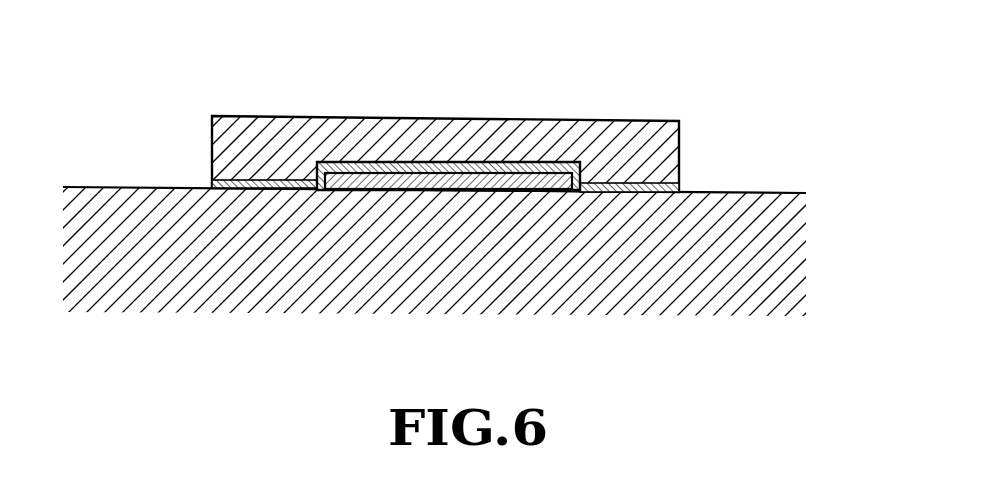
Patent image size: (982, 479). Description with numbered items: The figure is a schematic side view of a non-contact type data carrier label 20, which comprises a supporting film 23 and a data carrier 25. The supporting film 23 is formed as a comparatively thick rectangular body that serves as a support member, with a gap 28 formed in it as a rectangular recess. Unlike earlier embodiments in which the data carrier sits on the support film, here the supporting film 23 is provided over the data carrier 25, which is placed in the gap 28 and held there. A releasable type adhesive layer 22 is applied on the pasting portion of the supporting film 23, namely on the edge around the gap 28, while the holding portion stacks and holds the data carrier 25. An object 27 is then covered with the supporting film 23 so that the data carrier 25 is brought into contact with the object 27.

The non-contact type data carrier label 20 is at (586, 92).
The releasable type adhesive layer 22 is at (212, 188).
The supporting film 23 is at (281, 137).
The data carrier 25 is at (430, 183).
The object 27 is at (778, 248).
The gap 28 is at (521, 169).